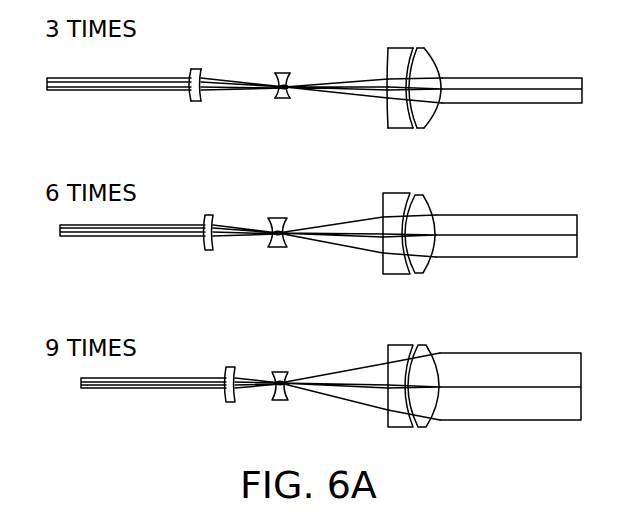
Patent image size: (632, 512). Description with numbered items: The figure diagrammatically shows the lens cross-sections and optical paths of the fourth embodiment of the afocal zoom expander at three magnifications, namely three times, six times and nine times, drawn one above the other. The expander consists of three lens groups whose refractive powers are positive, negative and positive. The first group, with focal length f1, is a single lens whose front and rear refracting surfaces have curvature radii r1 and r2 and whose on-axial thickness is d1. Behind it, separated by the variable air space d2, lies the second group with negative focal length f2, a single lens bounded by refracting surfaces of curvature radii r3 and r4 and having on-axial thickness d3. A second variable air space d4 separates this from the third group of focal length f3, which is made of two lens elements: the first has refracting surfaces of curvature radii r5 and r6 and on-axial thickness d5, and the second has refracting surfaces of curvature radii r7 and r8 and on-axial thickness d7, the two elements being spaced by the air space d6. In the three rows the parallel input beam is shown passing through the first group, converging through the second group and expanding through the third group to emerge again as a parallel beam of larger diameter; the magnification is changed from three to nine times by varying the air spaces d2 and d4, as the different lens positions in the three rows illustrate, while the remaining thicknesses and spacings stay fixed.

The focal length of first lens group f1 is at (195, 73).
The focal length of second lens group f2 is at (288, 77).
The focal length of third lens group f3 is at (442, 40).
The on-axial thickness of first lens d1 is at (193, 76).
The air space between first and second lens groups d2 is at (243, 74).
The on-axial thickness of second lens d3 is at (286, 78).
The air space between second and third lens groups d4 is at (336, 78).
The on-axial thickness of first element of third lens group d5 is at (394, 77).
The air space within third lens group d6 is at (416, 77).
The on-axial thickness of second element of third lens group d7 is at (432, 85).
The curvature radius of first refracting surface r1 is at (191, 98).
The curvature radius of second refracting surface r2 is at (201, 98).
The curvature radius of third refracting surface r3 is at (275, 97).
The curvature radius of fourth refracting surface r4 is at (291, 97).
The curvature radius of fifth refracting surface r5 is at (388, 117).
The curvature radius of sixth refracting surface r6 is at (411, 126).
The curvature radius of seventh refracting surface r7 is at (418, 126).
The curvature radius of eighth refracting surface r8 is at (436, 118).